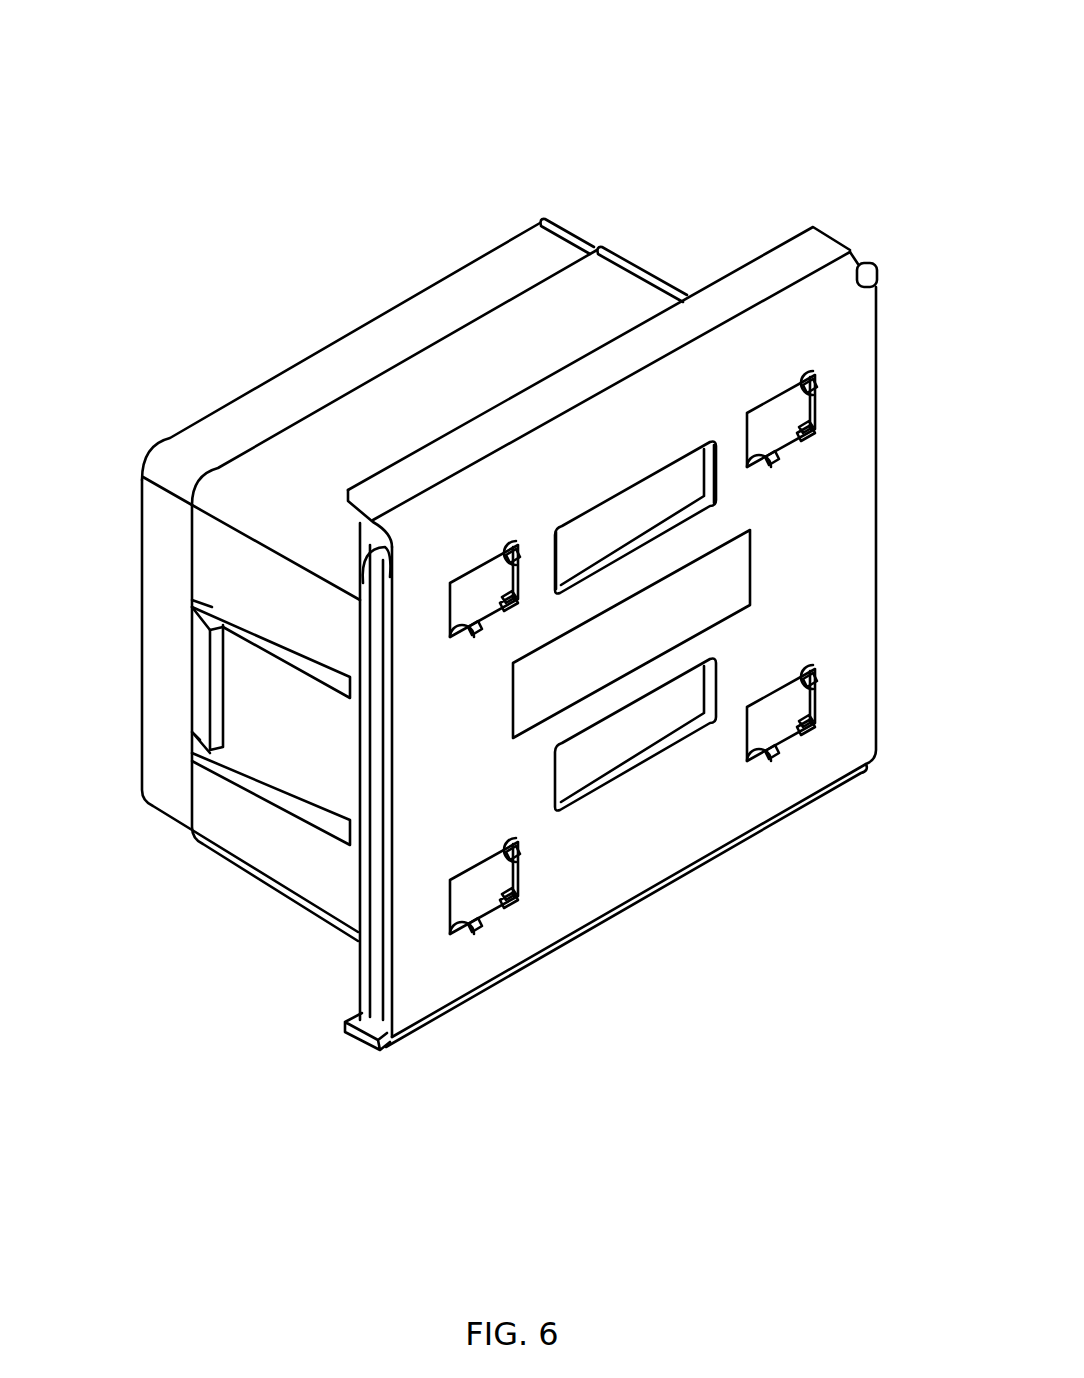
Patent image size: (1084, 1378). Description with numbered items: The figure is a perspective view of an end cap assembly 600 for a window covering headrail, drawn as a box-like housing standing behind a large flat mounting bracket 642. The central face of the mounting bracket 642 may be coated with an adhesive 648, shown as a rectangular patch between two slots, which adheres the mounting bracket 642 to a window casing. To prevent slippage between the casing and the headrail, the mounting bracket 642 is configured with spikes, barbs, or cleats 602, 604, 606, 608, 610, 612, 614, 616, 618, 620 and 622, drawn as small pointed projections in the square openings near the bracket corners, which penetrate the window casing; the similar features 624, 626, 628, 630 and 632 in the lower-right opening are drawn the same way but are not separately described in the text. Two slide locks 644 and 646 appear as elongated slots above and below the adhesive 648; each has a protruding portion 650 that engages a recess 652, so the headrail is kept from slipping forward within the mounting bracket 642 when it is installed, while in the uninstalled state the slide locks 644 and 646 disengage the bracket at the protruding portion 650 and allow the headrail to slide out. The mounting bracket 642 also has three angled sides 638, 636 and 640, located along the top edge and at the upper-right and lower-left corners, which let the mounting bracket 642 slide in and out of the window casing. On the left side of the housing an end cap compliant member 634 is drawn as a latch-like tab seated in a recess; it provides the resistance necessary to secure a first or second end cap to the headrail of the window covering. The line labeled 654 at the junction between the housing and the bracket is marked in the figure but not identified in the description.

The connector housing assembly 600 is at (150, 55).
The cleat 602 is at (450, 578).
The cleat 604 is at (508, 545).
The cleat 606 is at (458, 636).
The cleat 608 is at (518, 606).
The cleat 610 is at (739, 410).
The cleat 612 is at (808, 380).
The cleat 614 is at (806, 436).
The cleat 616 is at (760, 466).
The cleat 618 is at (806, 668).
The cleat 620 is at (806, 722).
The cleat 622 is at (760, 758).
The third port opening 624 is at (739, 704).
The fourth port opening 626 is at (452, 872).
The fourth port upper latch 628 is at (510, 840).
The fourth port side latch 630 is at (515, 900).
The fourth port lower latch 632 is at (460, 930).
The end cap compliant member 634 is at (203, 683).
The angled side 636 is at (868, 264).
The angled side 638 is at (792, 247).
The angled side 640 is at (358, 1045).
The mounting bracket 642 is at (668, 853).
The slide lock 644 is at (598, 548).
The slide lock 646 is at (601, 761).
The adhesive 648 is at (603, 662).
The protruding portion 650 is at (573, 553).
The recess 652 is at (702, 455).
The gasket 654 is at (368, 888).